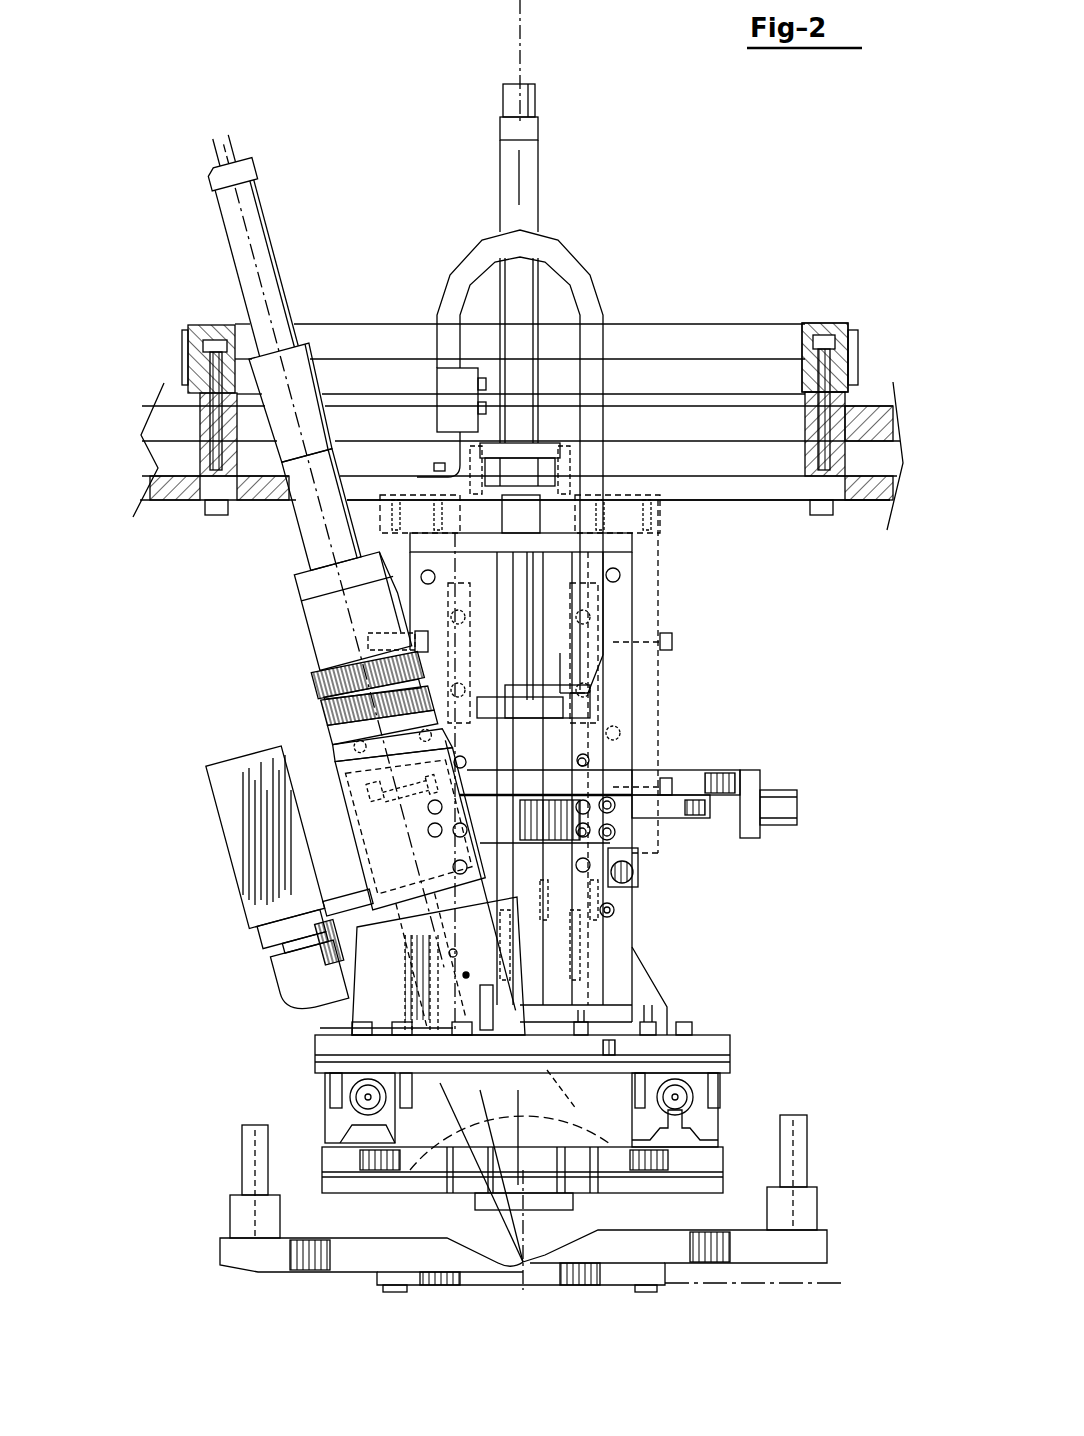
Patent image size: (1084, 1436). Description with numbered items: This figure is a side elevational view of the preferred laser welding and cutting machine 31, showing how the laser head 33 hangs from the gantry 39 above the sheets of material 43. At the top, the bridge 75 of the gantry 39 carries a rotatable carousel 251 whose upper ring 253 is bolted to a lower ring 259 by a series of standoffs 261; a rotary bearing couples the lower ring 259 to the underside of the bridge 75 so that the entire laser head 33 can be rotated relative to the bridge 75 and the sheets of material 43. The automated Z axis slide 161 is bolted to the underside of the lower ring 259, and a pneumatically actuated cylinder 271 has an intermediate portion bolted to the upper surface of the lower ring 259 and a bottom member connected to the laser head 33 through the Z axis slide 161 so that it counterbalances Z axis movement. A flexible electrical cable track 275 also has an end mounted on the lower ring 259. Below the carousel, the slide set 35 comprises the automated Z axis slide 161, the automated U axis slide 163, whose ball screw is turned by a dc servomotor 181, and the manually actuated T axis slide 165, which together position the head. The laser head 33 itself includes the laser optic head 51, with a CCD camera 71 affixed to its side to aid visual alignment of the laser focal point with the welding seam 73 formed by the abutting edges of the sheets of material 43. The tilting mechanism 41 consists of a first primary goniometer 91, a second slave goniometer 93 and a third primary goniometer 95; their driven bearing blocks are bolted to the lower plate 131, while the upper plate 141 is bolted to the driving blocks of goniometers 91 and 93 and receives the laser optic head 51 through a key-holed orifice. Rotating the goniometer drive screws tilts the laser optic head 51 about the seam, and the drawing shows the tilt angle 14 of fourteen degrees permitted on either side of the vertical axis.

The degrees of laser tilting 14 is at (512, 27).
The laser welding and cutting machine 31 is at (768, 189).
The laser head 33 is at (180, 684).
The slide set 35 is at (645, 922).
The gantry 39 is at (866, 346).
The tilting mechanism 41 is at (748, 1069).
The sheets of material 43 is at (365, 1289).
The laser optic head 51 is at (333, 622).
The CCD camera 71 is at (240, 838).
The welding seam 73 is at (508, 1180).
The bridge 75 is at (865, 425).
The first primary goniometer 91 is at (715, 1130).
The second slave goniometer 93 is at (315, 1135).
The third primary goniometer 95 is at (533, 1100).
The lower plate 131 is at (705, 1155).
The upper plate 141 is at (730, 1040).
The automated Z axis slide 161 is at (615, 605).
The automated U axis slide 163 is at (690, 776).
The T axis slide 165 is at (640, 875).
The dc servomotor 181 is at (783, 800).
The rotatable carousel 251 is at (843, 340).
The upper ring 253 is at (655, 338).
The lower ring 259 is at (740, 488).
The standoffs 261 is at (835, 425).
The pneumatically actuated cylinder 271 is at (508, 182).
The flexible electrical cable track 275 is at (550, 260).